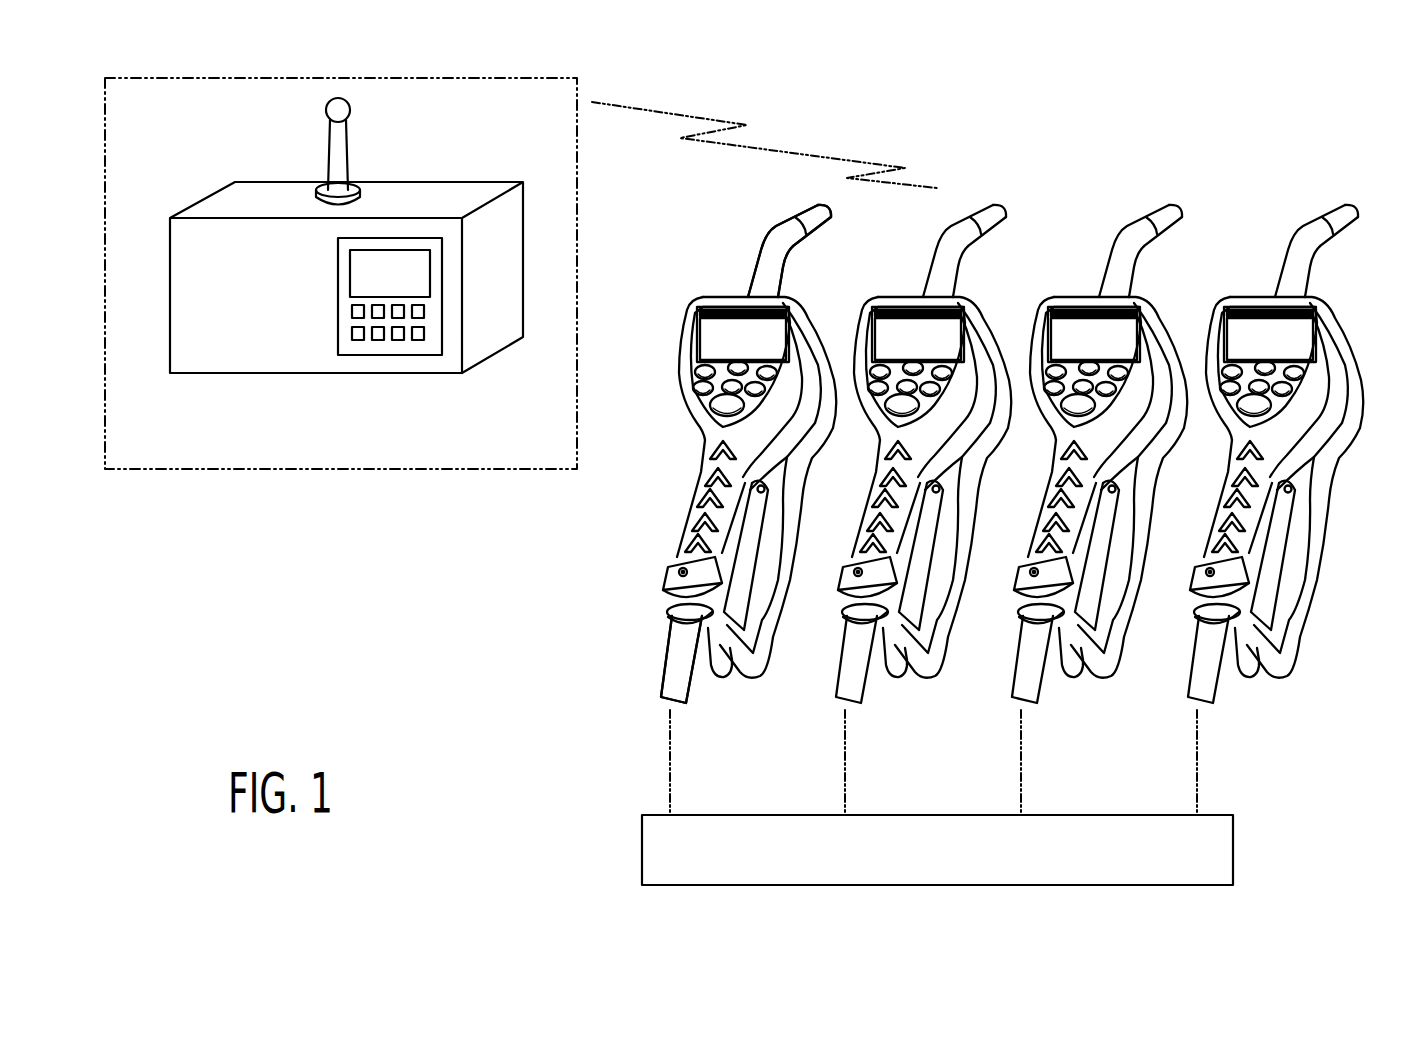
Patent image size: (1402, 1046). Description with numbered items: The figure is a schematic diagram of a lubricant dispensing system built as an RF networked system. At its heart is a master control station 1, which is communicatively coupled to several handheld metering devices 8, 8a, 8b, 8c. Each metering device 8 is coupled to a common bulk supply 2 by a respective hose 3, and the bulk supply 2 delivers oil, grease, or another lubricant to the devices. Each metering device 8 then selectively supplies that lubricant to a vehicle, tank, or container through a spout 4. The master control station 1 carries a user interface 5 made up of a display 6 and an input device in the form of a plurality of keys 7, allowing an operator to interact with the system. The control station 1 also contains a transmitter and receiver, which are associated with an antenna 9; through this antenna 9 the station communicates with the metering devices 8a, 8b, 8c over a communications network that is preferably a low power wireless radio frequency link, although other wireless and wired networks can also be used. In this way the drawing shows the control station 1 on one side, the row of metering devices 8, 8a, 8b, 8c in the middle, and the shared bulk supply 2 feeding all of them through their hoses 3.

The master control station 1 is at (348, 275).
The bulk supply 2 is at (1233, 853).
The hose 3 is at (665, 653).
The spout 4 is at (763, 240).
The user interface 5 is at (387, 309).
The display 6 is at (437, 272).
The keys 7 is at (438, 323).
The handheld metering device 8 is at (716, 454).
The handheld metering device 8a is at (998, 321).
The handheld metering device 8b is at (1176, 321).
The handheld metering device 8c is at (1352, 326).
The antenna 9 is at (348, 145).